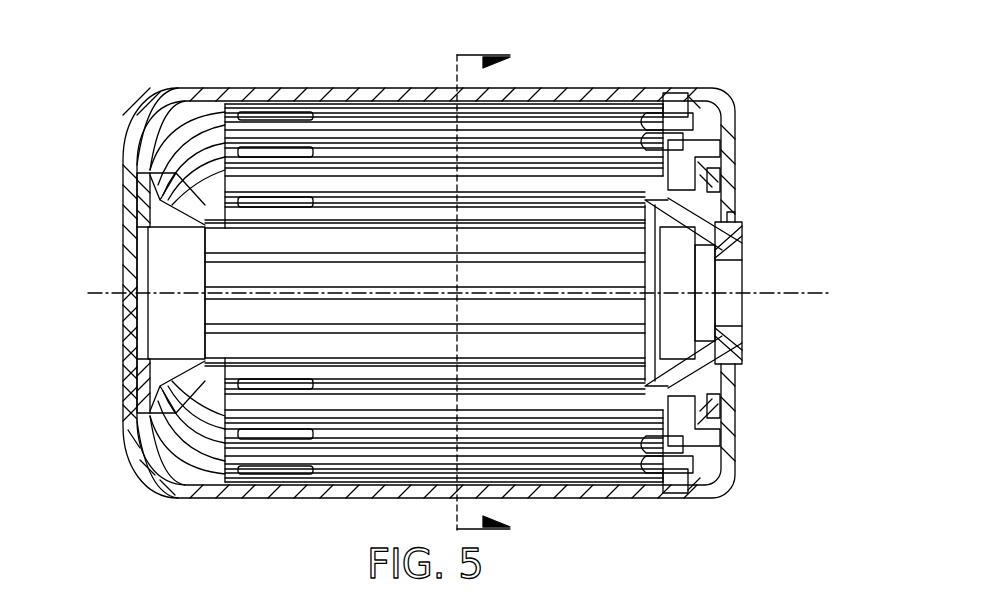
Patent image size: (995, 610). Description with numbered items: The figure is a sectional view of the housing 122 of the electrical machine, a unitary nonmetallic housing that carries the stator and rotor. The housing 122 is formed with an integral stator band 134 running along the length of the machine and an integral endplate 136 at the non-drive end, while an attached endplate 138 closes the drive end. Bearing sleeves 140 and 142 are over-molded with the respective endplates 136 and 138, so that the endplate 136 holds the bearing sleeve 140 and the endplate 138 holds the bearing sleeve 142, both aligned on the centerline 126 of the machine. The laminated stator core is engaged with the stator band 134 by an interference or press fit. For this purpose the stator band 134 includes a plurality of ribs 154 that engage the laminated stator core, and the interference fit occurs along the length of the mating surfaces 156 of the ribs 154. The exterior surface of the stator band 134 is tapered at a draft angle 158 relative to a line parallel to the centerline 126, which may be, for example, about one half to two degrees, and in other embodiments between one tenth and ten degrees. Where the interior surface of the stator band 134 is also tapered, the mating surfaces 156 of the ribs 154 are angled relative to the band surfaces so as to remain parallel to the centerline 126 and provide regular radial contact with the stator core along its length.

The housing 122 is at (681, 44).
The centerline 126 is at (805, 295).
The stator band 134 is at (572, 87).
The endplate 136 is at (122, 160).
The endplate 138 is at (736, 148).
The bearing sleeve 140 is at (165, 228).
The bearing sleeve 142 is at (743, 227).
The ribs 154 is at (718, 446).
The mating surfaces 156 is at (640, 482).
The draft angle 158 is at (350, 497).